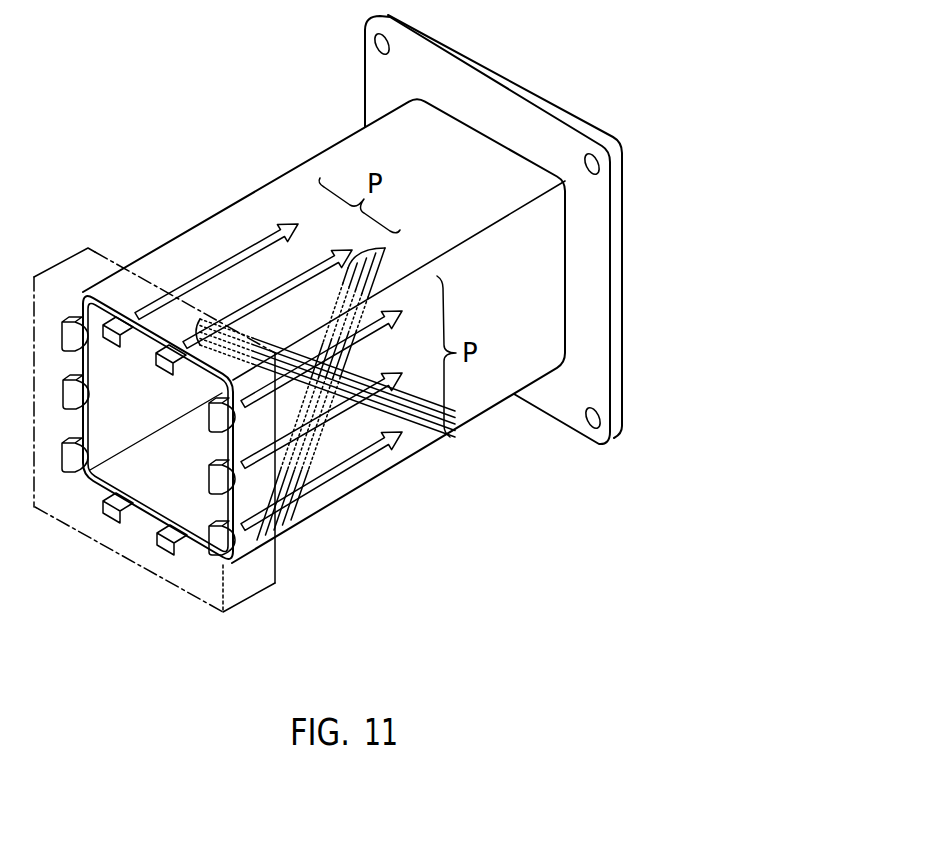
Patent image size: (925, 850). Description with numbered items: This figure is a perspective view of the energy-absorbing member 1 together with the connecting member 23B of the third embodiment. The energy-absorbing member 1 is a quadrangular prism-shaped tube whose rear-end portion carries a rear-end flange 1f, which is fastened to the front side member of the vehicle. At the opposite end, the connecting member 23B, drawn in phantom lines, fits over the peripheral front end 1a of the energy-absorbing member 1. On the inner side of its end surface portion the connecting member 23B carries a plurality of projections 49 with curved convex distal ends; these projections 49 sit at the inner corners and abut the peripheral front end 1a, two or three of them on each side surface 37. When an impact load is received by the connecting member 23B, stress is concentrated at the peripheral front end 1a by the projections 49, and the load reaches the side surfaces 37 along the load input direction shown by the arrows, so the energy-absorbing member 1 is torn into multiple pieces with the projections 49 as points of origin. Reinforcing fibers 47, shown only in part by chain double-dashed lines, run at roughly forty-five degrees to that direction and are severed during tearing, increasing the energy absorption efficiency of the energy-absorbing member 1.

The energy-absorbing member 1 is at (326, 294).
The peripheral front end 1a is at (96, 496).
The rear-end flange 1f is at (497, 102).
The connecting member 23B is at (53, 259).
The side surface 37 is at (380, 135).
The reinforcing fibers 47 is at (320, 487).
The projections 49 is at (178, 357).